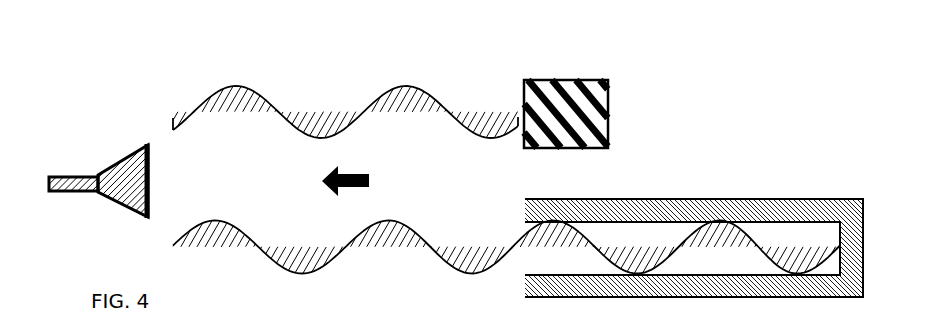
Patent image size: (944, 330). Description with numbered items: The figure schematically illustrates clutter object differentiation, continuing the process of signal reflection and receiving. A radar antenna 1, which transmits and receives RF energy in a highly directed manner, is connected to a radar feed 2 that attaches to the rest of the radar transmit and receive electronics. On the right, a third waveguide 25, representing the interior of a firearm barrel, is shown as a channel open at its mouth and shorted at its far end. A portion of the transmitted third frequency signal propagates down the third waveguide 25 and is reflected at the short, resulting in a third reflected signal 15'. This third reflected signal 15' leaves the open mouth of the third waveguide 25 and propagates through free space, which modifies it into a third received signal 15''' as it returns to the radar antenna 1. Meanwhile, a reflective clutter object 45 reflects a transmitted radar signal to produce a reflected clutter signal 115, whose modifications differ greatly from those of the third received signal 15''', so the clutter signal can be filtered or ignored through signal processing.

The radar antenna 1 is at (128, 163).
The radar feed 2 is at (77, 178).
The reflected clutter signal 115 is at (452, 118).
The reflective clutter object 45 is at (539, 82).
The third waveguide 25 is at (542, 198).
The third received signal 15''' is at (349, 240).
The third reflected signal 15' is at (682, 247).